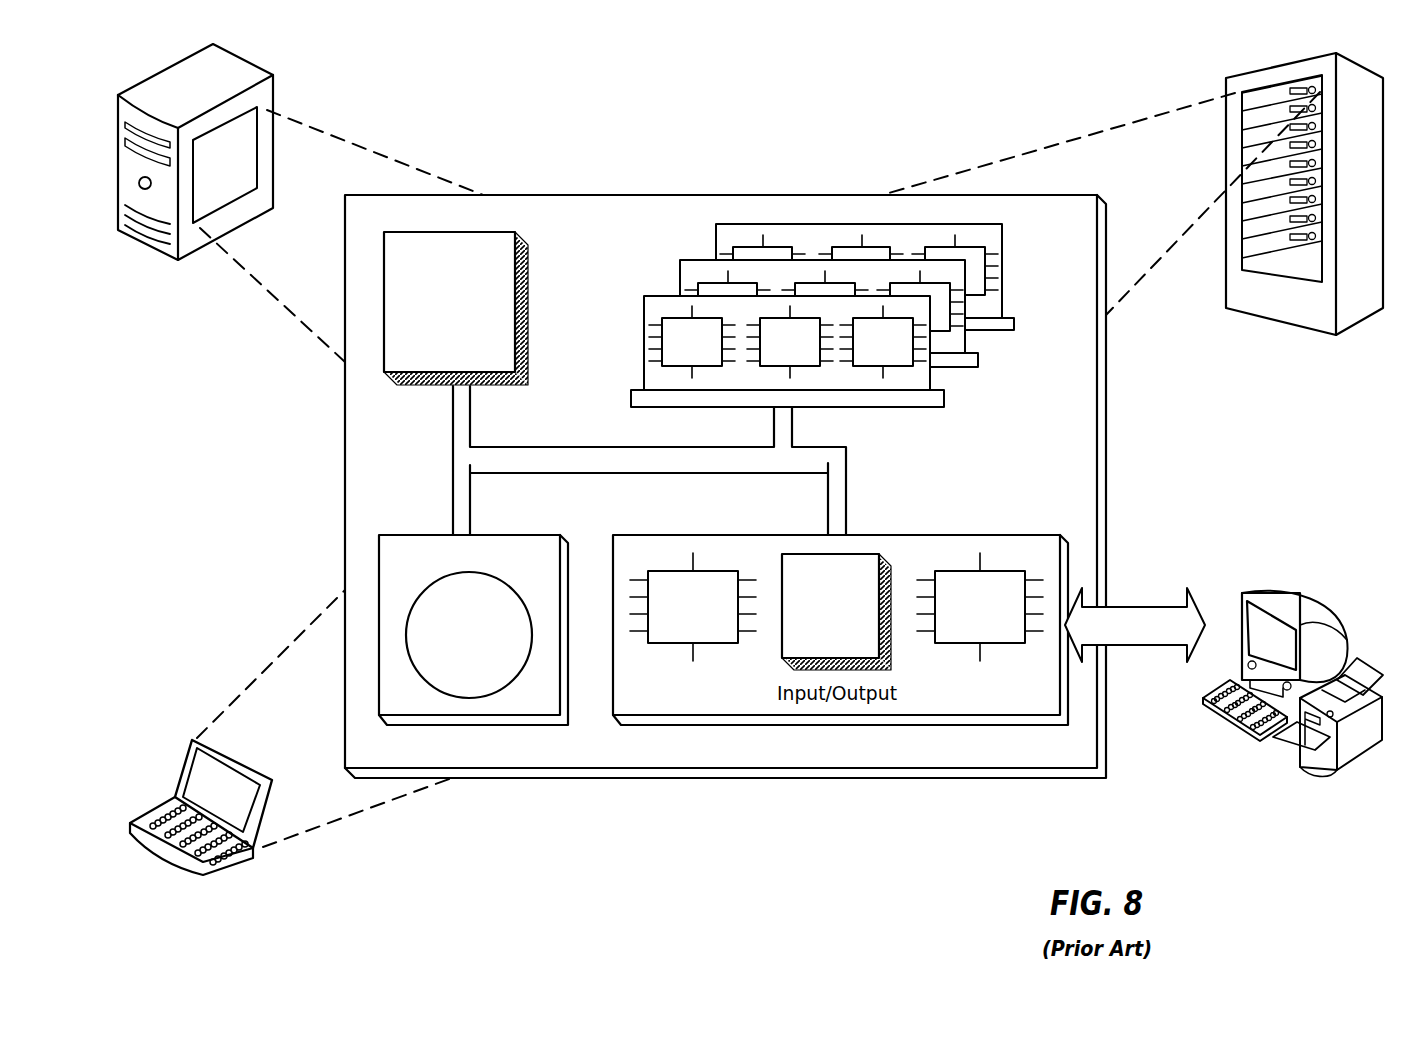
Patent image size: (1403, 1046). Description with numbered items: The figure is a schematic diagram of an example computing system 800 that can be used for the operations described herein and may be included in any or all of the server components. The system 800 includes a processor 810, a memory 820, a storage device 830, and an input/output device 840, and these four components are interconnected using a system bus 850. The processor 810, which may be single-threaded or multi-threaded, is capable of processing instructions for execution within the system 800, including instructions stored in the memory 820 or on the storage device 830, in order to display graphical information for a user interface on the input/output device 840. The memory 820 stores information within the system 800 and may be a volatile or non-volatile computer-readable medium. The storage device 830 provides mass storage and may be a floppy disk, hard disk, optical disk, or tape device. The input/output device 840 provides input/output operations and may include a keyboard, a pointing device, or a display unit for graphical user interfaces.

The computing system 800 is at (544, 108).
The processor 810 is at (502, 363).
The memory 820 is at (1003, 364).
The storage device 830 is at (549, 707).
The input/output device 840 is at (1242, 597).
The system bus 850 is at (645, 462).